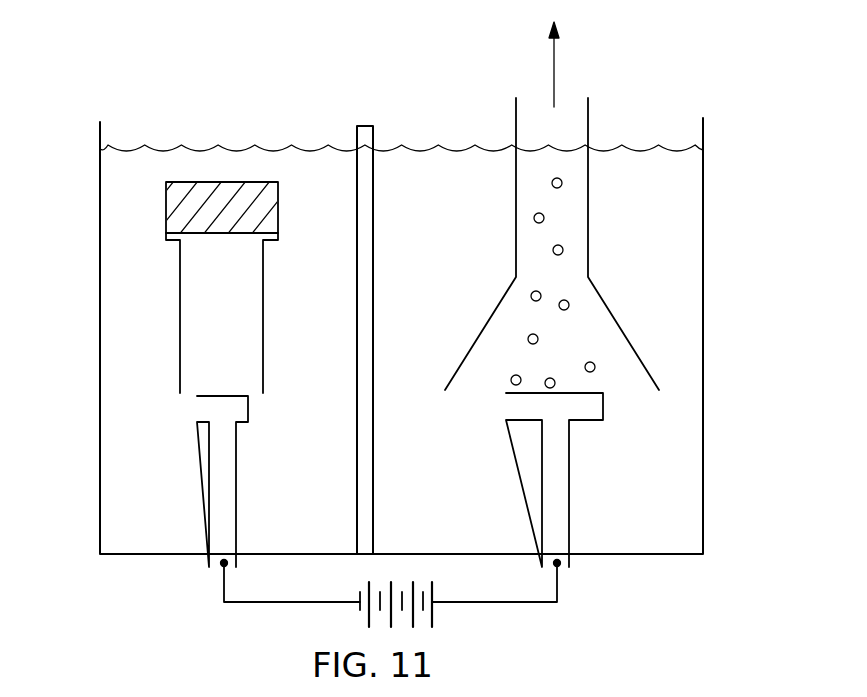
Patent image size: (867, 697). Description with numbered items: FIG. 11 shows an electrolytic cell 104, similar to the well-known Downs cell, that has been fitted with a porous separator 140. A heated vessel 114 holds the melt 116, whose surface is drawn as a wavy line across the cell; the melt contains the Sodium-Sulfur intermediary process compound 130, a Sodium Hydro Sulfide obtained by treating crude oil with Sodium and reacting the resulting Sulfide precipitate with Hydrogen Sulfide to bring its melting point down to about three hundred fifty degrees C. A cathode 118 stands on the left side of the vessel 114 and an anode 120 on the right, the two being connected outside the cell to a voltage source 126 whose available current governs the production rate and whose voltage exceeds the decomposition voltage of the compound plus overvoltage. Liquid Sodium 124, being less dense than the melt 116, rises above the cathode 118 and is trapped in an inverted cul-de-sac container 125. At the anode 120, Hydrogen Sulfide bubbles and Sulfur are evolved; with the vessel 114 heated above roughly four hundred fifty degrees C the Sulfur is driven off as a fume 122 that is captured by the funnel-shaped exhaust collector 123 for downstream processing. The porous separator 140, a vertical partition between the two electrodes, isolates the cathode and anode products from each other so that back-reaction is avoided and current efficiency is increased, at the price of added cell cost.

The cell 104 is at (744, 297).
The vessel 114 is at (704, 472).
The melt 116 is at (121, 222).
The cathode 118 is at (216, 478).
The anode 120 is at (563, 497).
The fume 122 is at (556, 73).
The exhaust collector 123 is at (515, 212).
The liquid Sodium 124 is at (207, 193).
The cul-de-sac container 125 is at (283, 215).
The voltage source 126 is at (282, 638).
The Sodium-Sulfur intermediary process compound 130 is at (334, 516).
The porous separator 140 is at (365, 136).